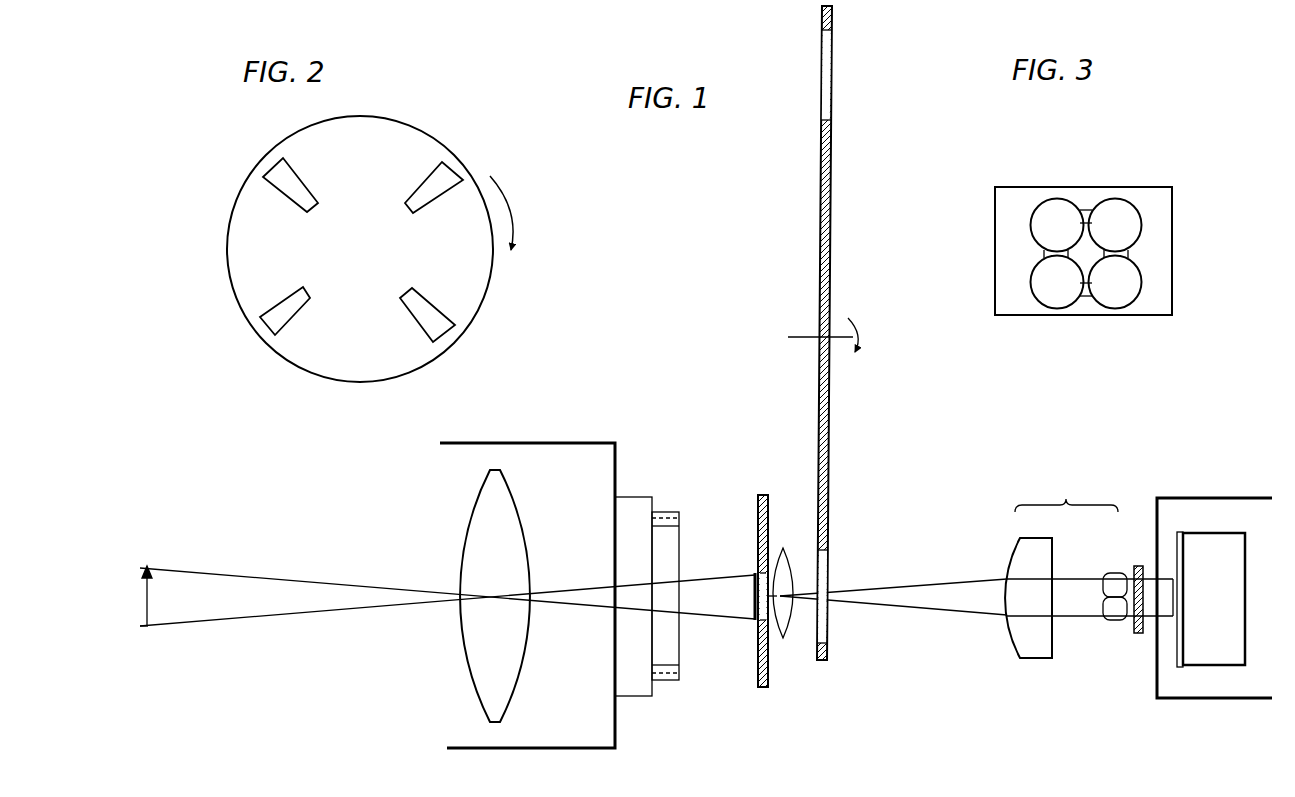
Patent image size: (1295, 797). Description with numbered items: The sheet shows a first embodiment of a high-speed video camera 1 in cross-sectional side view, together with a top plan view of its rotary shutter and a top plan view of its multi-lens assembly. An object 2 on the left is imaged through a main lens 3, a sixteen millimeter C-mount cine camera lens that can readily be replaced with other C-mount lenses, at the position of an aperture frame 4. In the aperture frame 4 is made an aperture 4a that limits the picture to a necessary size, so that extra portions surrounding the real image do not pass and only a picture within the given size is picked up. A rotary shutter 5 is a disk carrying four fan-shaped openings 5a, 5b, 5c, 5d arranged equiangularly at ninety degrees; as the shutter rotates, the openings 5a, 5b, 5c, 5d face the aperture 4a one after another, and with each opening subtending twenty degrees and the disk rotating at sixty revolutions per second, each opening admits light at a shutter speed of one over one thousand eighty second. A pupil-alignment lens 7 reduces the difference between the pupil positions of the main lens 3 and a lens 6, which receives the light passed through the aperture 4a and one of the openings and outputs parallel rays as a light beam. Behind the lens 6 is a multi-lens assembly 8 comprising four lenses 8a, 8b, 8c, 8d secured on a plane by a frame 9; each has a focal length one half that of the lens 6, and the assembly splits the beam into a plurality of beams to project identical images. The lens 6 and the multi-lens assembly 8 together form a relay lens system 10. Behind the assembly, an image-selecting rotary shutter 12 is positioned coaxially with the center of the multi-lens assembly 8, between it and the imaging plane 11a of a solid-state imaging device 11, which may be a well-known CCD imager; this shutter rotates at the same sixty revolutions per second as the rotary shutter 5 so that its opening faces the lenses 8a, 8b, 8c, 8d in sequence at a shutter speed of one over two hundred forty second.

In FIG. 1, the video camera 1 is at (758, 238).
In FIG. 1, the object 2 is at (150, 610).
In FIG. 1, the main lens 3 is at (498, 443).
In FIG. 1, the aperture frame 4 is at (743, 568).
In FIG. 1, the aperture 4a is at (755, 573).
In FIG. 1, the rotary shutter 5 is at (853, 333).
In FIG. 2, the rotary shutter 5 is at (370, 237).
In FIG. 1, the opening 5a is at (828, 627).
In FIG. 2, the opening 5a is at (452, 330).
In FIG. 2, the opening 5b is at (267, 325).
In FIG. 1, the opening 5c is at (832, 80).
In FIG. 2, the opening 5c is at (265, 167).
In FIG. 2, the opening 5d is at (458, 172).
In FIG. 1, the lens 6 is at (1010, 560).
In FIG. 1, the pupil-alignment lens 7 is at (786, 548).
In FIG. 1, the multi-lens assembly 8 is at (1098, 572).
In FIG. 3, the multi-lens assembly 8 is at (1118, 244).
In FIG. 3, the lens 8a is at (1040, 205).
In FIG. 3, the lens 8b is at (1142, 229).
In FIG. 3, the lens 8c is at (1140, 296).
In FIG. 3, the lens 8d is at (1052, 307).
In FIG. 3, the frame 9 is at (995, 288).
In FIG. 1, the relay lens system 10 is at (1078, 564).
In FIG. 1, the solid-state imaging device 11 is at (1214, 576).
In FIG. 1, the imaging plane 11a is at (1178, 545).
In FIG. 1, the image-selecting rotary shutter 12 is at (1138, 566).